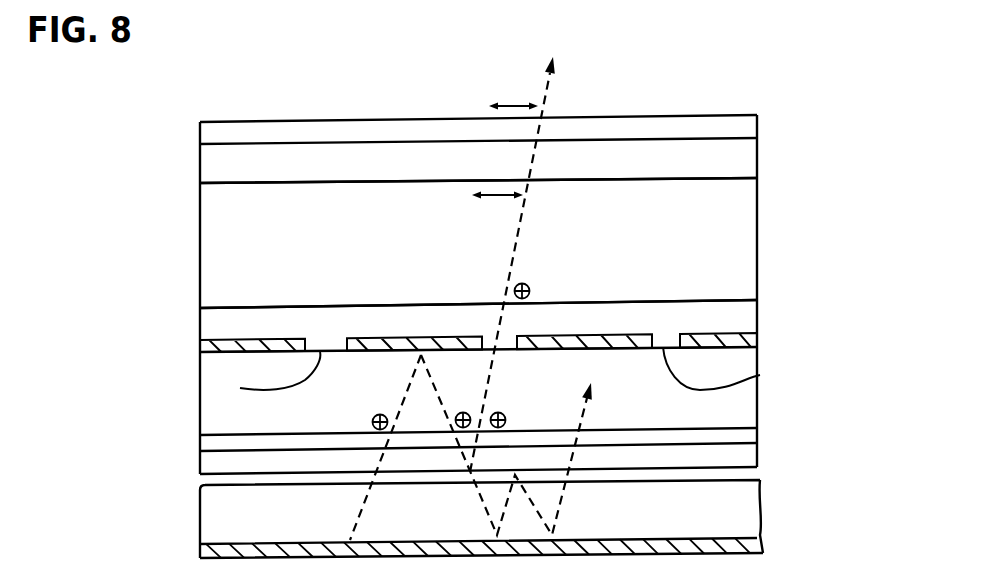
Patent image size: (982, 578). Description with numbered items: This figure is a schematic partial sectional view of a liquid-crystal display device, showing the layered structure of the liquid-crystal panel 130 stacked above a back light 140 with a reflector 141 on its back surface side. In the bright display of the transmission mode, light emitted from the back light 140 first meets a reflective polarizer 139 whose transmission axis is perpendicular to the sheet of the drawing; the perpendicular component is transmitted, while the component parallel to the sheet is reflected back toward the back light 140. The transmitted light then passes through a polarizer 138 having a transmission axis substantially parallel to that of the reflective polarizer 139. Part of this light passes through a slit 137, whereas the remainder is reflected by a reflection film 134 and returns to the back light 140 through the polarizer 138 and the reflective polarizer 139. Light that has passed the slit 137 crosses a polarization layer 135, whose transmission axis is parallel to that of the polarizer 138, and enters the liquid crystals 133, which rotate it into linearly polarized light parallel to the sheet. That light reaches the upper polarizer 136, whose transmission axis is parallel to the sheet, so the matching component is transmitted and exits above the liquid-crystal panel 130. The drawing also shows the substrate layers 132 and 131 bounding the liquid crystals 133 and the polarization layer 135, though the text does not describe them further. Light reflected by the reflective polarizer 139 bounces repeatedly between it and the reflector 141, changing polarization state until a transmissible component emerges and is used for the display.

The liquid-crystal panel 130 is at (224, 108).
The polarizer 136 is at (208, 137).
The upper substrate 132 is at (204, 168).
The liquid crystals 133 is at (213, 243).
The polarization layer 135 is at (210, 326).
The reflection film 134 is at (207, 348).
The slit 137 is at (240, 388).
The lower substrate 131 is at (217, 418).
The polarizer 138 is at (222, 442).
The reflective polarizer 139 is at (222, 466).
The back light 140 is at (748, 498).
The reflector 141 is at (750, 545).